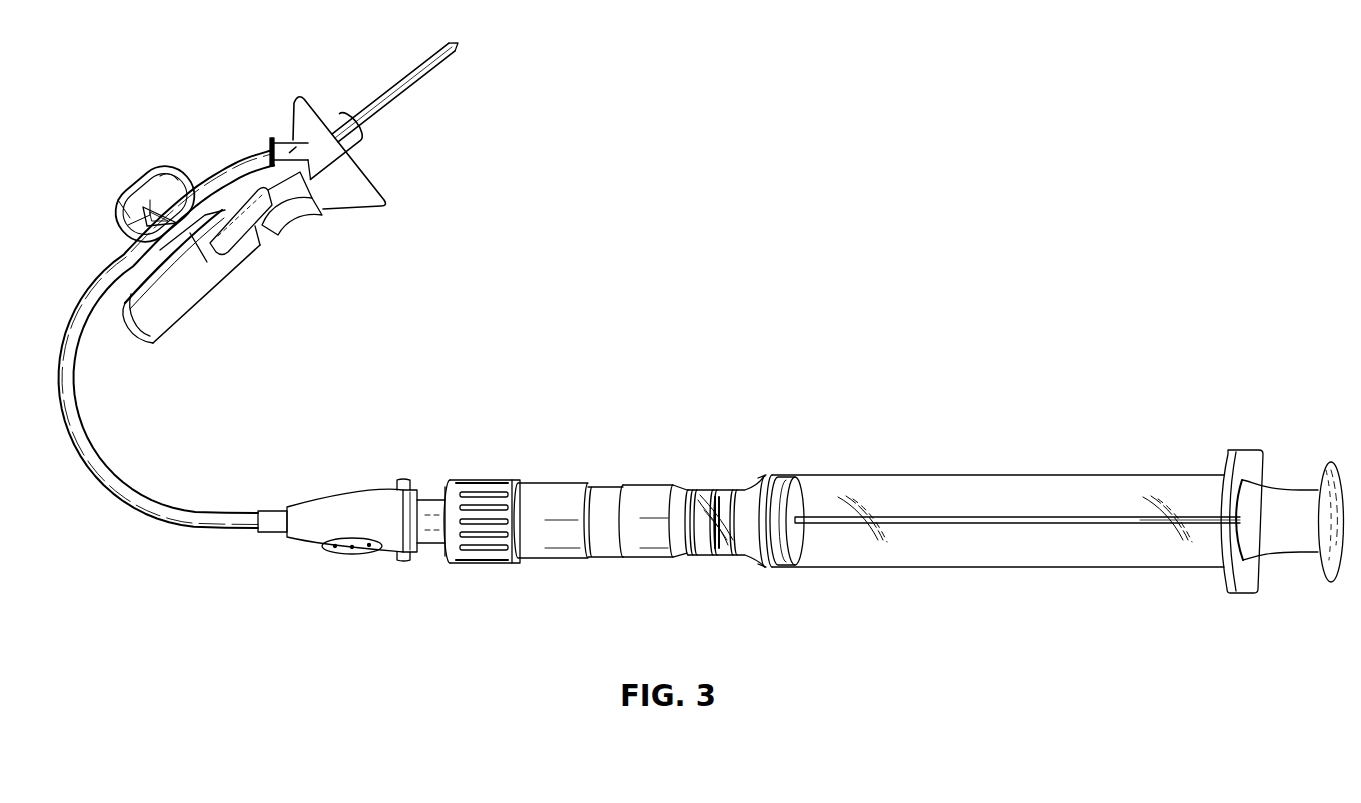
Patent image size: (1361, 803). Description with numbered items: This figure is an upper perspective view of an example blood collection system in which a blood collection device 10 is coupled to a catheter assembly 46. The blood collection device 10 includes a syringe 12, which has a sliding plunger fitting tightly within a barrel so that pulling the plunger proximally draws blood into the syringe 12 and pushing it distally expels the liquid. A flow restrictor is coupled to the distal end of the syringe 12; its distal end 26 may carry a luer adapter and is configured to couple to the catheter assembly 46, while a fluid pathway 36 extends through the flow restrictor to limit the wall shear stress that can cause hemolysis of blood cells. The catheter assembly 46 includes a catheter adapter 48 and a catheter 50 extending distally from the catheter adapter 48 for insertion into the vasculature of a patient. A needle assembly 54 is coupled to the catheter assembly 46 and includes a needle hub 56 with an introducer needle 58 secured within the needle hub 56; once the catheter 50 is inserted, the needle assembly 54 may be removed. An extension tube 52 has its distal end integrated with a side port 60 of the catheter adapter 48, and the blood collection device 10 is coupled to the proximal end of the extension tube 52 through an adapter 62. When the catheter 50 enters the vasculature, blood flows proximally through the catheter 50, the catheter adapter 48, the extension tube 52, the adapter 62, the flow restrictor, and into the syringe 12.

The blood collection device 10 is at (1114, 367).
The syringe 12 is at (1114, 475).
The distal end of the flow restrictor 26 is at (487, 481).
The fluid pathway 36 is at (453, 563).
The catheter assembly 46 is at (166, 113).
The catheter adapter 48 is at (340, 127).
The catheter 50 is at (418, 88).
The extension tube 52 is at (168, 527).
The needle assembly 54 is at (268, 272).
The needle hub 56 is at (207, 295).
The introducer needle 58 is at (456, 44).
The side port 60 is at (284, 142).
The adapter 62 is at (358, 507).